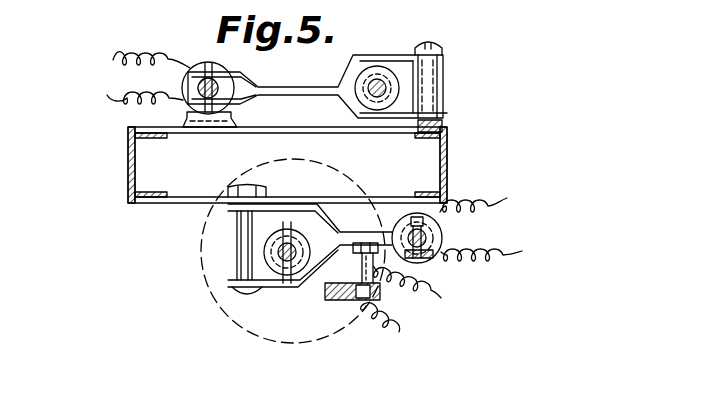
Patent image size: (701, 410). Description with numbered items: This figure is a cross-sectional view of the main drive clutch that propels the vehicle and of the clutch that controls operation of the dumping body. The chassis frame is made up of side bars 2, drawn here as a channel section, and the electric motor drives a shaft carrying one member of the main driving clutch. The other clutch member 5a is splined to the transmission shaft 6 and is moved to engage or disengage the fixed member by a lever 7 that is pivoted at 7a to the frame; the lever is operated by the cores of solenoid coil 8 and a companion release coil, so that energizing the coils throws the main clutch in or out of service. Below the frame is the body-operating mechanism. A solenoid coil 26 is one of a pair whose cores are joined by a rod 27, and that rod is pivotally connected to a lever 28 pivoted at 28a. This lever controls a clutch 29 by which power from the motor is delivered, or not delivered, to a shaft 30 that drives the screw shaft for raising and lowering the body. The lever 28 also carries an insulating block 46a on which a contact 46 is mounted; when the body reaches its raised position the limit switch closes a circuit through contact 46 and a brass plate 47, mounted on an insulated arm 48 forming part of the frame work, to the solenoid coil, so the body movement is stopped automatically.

The side bars 2 is at (130, 170).
The clutch member 5a is at (398, 86).
The transmission shaft 6 is at (392, 93).
The lever 7 is at (292, 95).
The pivot 7a is at (426, 79).
The solenoid coil 8 is at (184, 83).
The solenoid coil 26 is at (443, 233).
The rod 27 is at (443, 258).
The lever 28 is at (300, 287).
The pivot 28a is at (240, 236).
The clutch 29 is at (270, 243).
The shaft 30 is at (280, 253).
The contact 46 is at (378, 281).
The insulating block 46a is at (366, 243).
The brass plate 47 is at (400, 298).
The insulated arm 48 is at (355, 301).